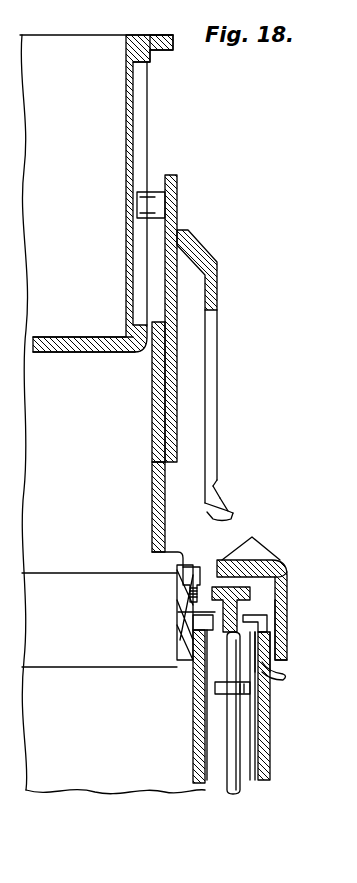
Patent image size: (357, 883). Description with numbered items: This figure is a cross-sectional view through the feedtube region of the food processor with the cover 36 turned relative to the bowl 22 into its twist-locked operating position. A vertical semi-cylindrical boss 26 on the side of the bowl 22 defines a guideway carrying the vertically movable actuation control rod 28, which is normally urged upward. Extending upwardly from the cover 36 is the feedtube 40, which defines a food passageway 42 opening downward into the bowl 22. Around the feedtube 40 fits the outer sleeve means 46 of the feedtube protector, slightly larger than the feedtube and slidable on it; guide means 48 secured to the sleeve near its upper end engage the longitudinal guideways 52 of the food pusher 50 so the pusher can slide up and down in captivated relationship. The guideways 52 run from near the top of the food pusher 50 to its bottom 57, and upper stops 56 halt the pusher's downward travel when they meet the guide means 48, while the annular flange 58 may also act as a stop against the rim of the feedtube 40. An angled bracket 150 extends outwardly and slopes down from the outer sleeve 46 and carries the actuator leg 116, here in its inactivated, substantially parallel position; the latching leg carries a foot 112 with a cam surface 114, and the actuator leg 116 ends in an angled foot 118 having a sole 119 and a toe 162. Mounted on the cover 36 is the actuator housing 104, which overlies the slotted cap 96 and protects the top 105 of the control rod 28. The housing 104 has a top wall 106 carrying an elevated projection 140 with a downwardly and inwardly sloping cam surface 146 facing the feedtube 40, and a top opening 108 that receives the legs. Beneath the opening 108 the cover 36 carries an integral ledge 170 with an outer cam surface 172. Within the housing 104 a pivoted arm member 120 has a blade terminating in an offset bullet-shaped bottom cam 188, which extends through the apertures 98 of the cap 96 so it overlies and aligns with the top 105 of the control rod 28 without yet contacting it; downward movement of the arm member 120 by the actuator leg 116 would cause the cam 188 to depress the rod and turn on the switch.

The bowl 22 is at (80, 768).
The vertical semi-cylindrical boss 26 is at (265, 755).
The actuation control rod 28 is at (228, 768).
The cover 36 is at (155, 549).
The feedtube 40 is at (158, 484).
The food passageway 42 is at (155, 432).
The outer sleeve means 46 is at (170, 363).
The guide means 48 is at (152, 202).
The food pusher 50 is at (90, 6).
The longitudinal guideways 52 is at (148, 142).
The upper stops 56 is at (148, 66).
The bottom 57 is at (70, 357).
The annular flange 58 is at (175, 42).
The cap 96 is at (283, 675).
The apertures 98 is at (210, 670).
The actuator housing 104 is at (290, 612).
The top of the control rod 105 is at (273, 655).
The top wall 106 is at (285, 582).
The top opening 108 is at (200, 557).
The foot 112 is at (220, 482).
The cam surface 114 is at (226, 487).
The actuator leg 116 is at (213, 402).
The angled foot 118 is at (225, 500).
The sole 119 is at (232, 520).
The pivoted arm member 120 is at (270, 600).
The elevated projection 140 is at (268, 555).
The cam surface 146 is at (245, 543).
The angled bracket 150 is at (185, 245).
The toe 162 is at (232, 512).
The integral ledge 170 is at (185, 615).
The outer cam surface 172 is at (182, 582).
The bottom cam 188 is at (280, 640).